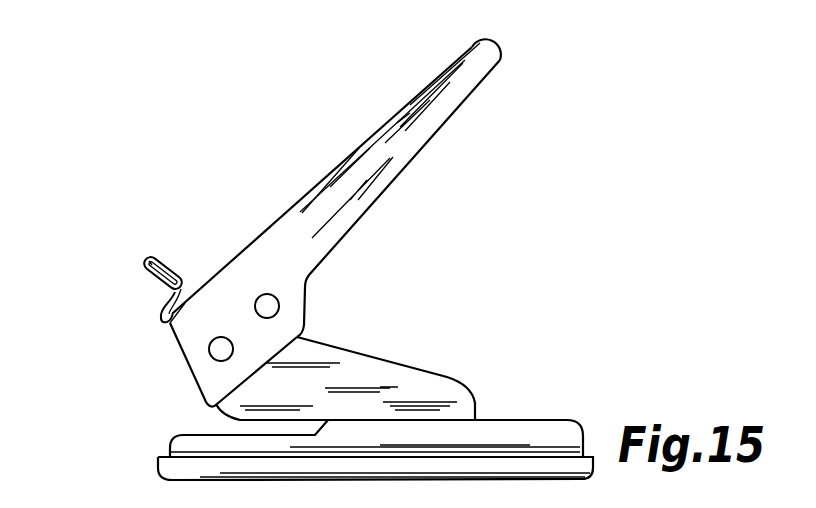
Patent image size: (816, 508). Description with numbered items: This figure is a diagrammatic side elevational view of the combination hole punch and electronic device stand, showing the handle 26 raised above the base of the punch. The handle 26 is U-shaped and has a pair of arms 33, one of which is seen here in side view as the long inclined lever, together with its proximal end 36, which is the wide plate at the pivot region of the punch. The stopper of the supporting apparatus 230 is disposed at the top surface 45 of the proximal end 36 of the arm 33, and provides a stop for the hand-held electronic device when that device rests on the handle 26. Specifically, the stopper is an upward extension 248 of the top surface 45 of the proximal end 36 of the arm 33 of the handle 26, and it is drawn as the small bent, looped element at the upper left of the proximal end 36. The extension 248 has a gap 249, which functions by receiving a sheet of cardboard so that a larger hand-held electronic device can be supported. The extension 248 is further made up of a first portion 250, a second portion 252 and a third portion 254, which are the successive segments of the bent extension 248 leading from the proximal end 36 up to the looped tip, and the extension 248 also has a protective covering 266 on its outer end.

The handle 26 is at (373, 186).
The arm 33 is at (408, 102).
The top surface 45 is at (228, 263).
The gap 249 is at (173, 322).
The supporting apparatus 230 is at (110, 248).
The extension 248 is at (110, 285).
The protective covering 266 is at (148, 262).
The third portion 254 is at (158, 279).
The second portion 252 is at (163, 303).
The first portion 250 is at (158, 318).
The proximal end 36 is at (190, 343).